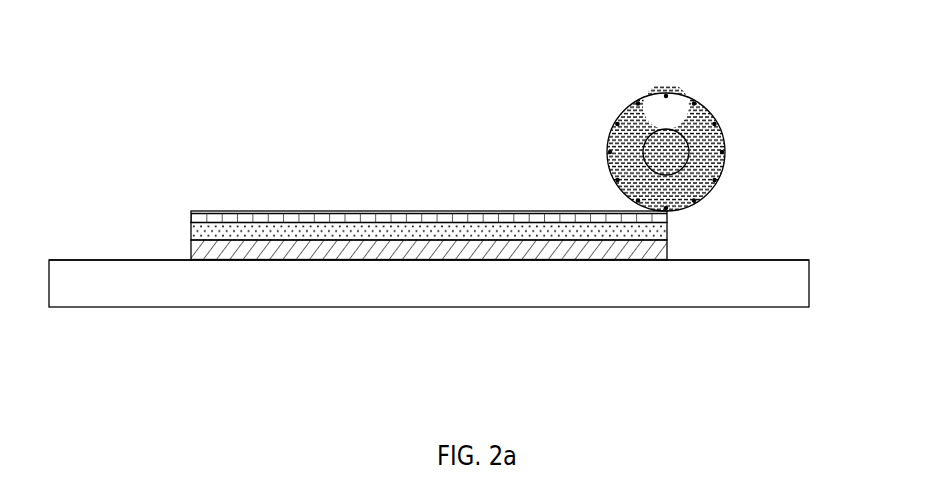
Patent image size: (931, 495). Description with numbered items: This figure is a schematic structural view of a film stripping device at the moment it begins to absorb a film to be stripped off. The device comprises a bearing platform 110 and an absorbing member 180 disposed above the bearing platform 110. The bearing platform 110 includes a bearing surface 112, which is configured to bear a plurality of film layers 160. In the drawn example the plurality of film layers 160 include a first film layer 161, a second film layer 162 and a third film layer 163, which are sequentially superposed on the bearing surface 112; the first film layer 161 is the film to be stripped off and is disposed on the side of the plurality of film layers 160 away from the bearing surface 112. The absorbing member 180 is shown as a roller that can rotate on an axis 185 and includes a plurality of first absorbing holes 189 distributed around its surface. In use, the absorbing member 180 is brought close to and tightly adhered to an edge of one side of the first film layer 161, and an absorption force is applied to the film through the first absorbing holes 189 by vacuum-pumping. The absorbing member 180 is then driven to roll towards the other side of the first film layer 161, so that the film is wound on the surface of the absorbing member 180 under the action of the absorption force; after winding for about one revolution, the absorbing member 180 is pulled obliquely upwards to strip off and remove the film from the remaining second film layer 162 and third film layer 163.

The bearing platform 110 is at (735, 292).
The bearing surface 112 is at (153, 259).
The plurality of film layers 160 is at (465, 266).
The first film layer 161 is at (236, 216).
The second film layer 162 is at (408, 228).
The third film layer 163 is at (608, 247).
The absorbing member 180 is at (712, 116).
The axis 185 is at (665, 137).
The first absorbing holes 189 is at (666, 97).